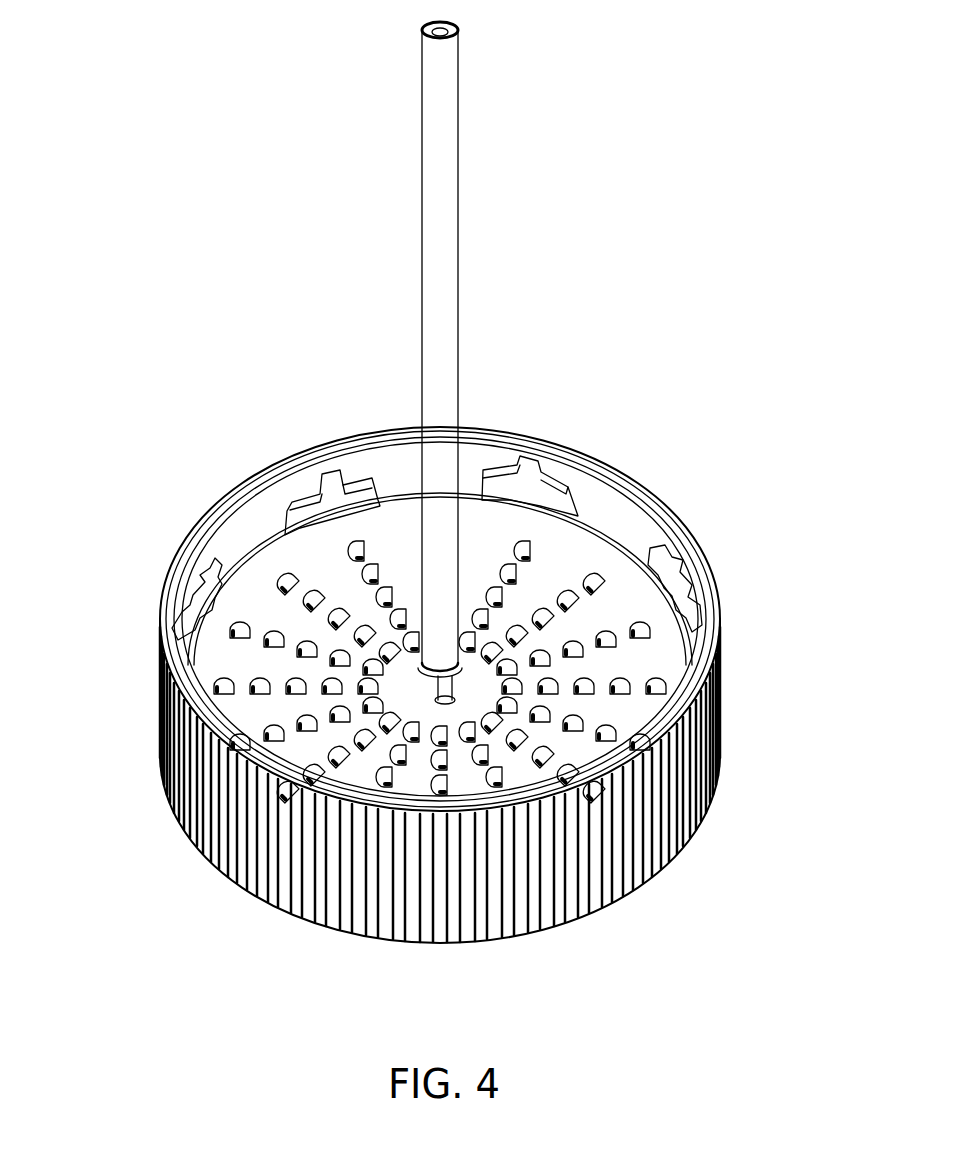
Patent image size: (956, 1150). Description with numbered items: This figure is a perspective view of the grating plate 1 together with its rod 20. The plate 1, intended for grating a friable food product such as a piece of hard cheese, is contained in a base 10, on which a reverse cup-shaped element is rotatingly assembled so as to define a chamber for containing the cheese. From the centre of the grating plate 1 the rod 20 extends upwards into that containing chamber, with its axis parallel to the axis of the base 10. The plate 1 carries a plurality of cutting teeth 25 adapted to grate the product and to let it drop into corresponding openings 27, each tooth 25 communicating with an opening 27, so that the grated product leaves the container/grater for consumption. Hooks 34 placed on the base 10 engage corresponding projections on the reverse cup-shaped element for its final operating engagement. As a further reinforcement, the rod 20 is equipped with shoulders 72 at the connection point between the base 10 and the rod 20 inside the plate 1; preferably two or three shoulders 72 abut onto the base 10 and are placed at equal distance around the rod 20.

The rod 20 is at (445, 265).
The base 10 is at (623, 517).
The hooks 34 is at (330, 500).
The grating plate 1 is at (435, 706).
The cutting teeth 25 is at (250, 685).
The openings 27 is at (288, 737).
The shoulders 72 is at (455, 686).